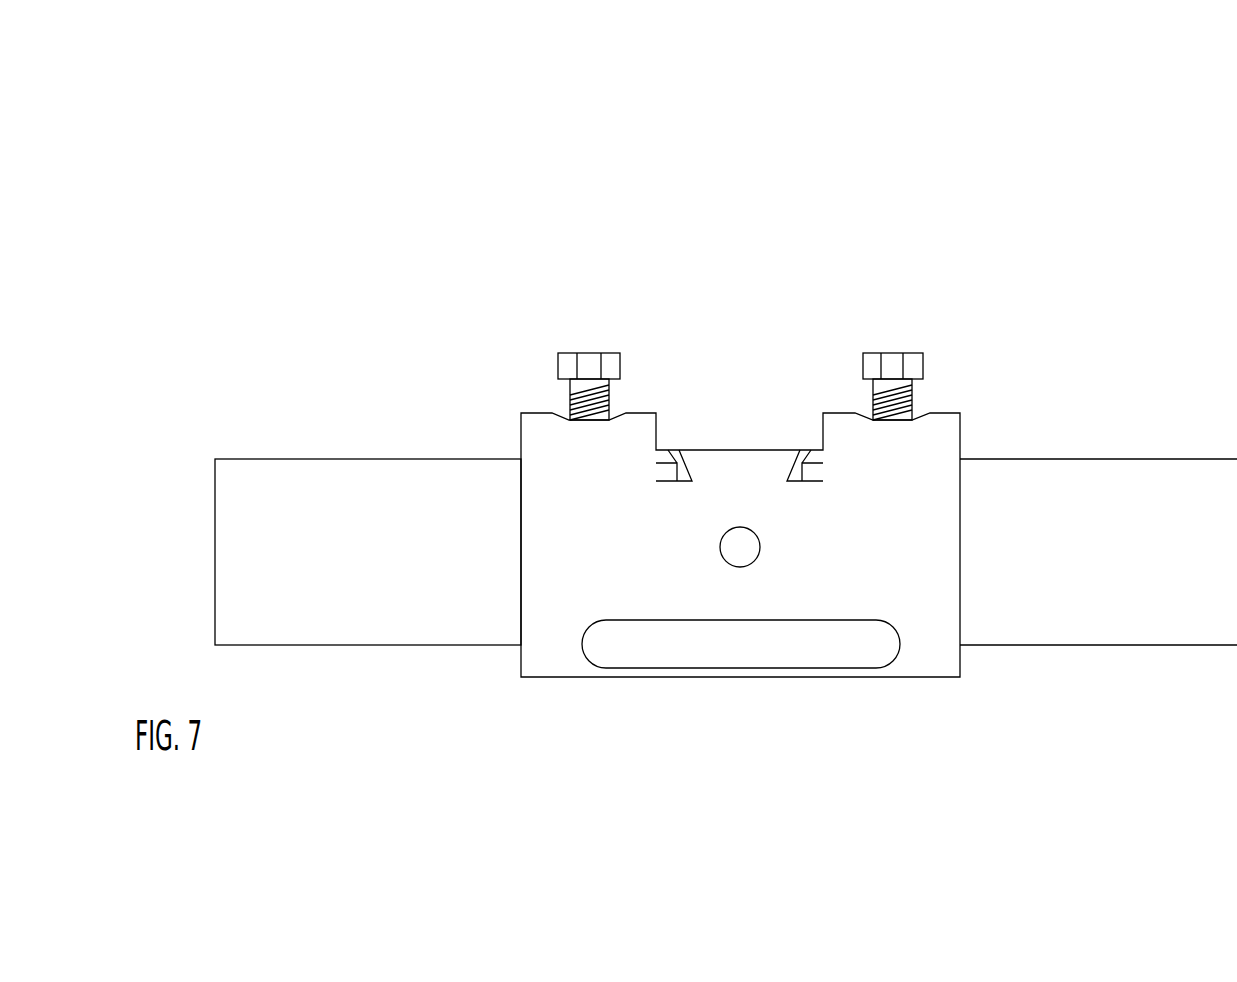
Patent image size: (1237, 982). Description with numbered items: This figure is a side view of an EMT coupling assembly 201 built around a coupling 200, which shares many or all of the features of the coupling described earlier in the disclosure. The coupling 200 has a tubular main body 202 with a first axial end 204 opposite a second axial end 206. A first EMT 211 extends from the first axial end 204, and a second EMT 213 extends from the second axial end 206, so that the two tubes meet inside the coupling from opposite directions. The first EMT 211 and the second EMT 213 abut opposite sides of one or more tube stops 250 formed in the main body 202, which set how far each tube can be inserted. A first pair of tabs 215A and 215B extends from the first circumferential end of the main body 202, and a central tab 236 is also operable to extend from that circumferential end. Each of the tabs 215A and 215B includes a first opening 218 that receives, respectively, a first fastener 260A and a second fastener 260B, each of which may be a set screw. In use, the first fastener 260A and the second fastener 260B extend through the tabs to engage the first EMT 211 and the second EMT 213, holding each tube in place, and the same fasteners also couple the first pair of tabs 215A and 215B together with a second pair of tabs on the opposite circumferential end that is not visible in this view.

The coupling 200 is at (791, 270).
The EMT coupling assembly 201 is at (453, 153).
The tubular main body 202 is at (560, 660).
The first axial end 204 is at (495, 662).
The second axial end 206 is at (970, 657).
The first EMT 211 is at (323, 482).
The second EMT 213 is at (1108, 488).
The first tab 215A is at (940, 448).
The second tab 215B is at (540, 448).
The first opening 218 is at (570, 415).
The central tab 236 is at (737, 467).
The tube stop 250 is at (744, 547).
The first fastener 260A is at (588, 365).
The second fastener 260B is at (892, 363).